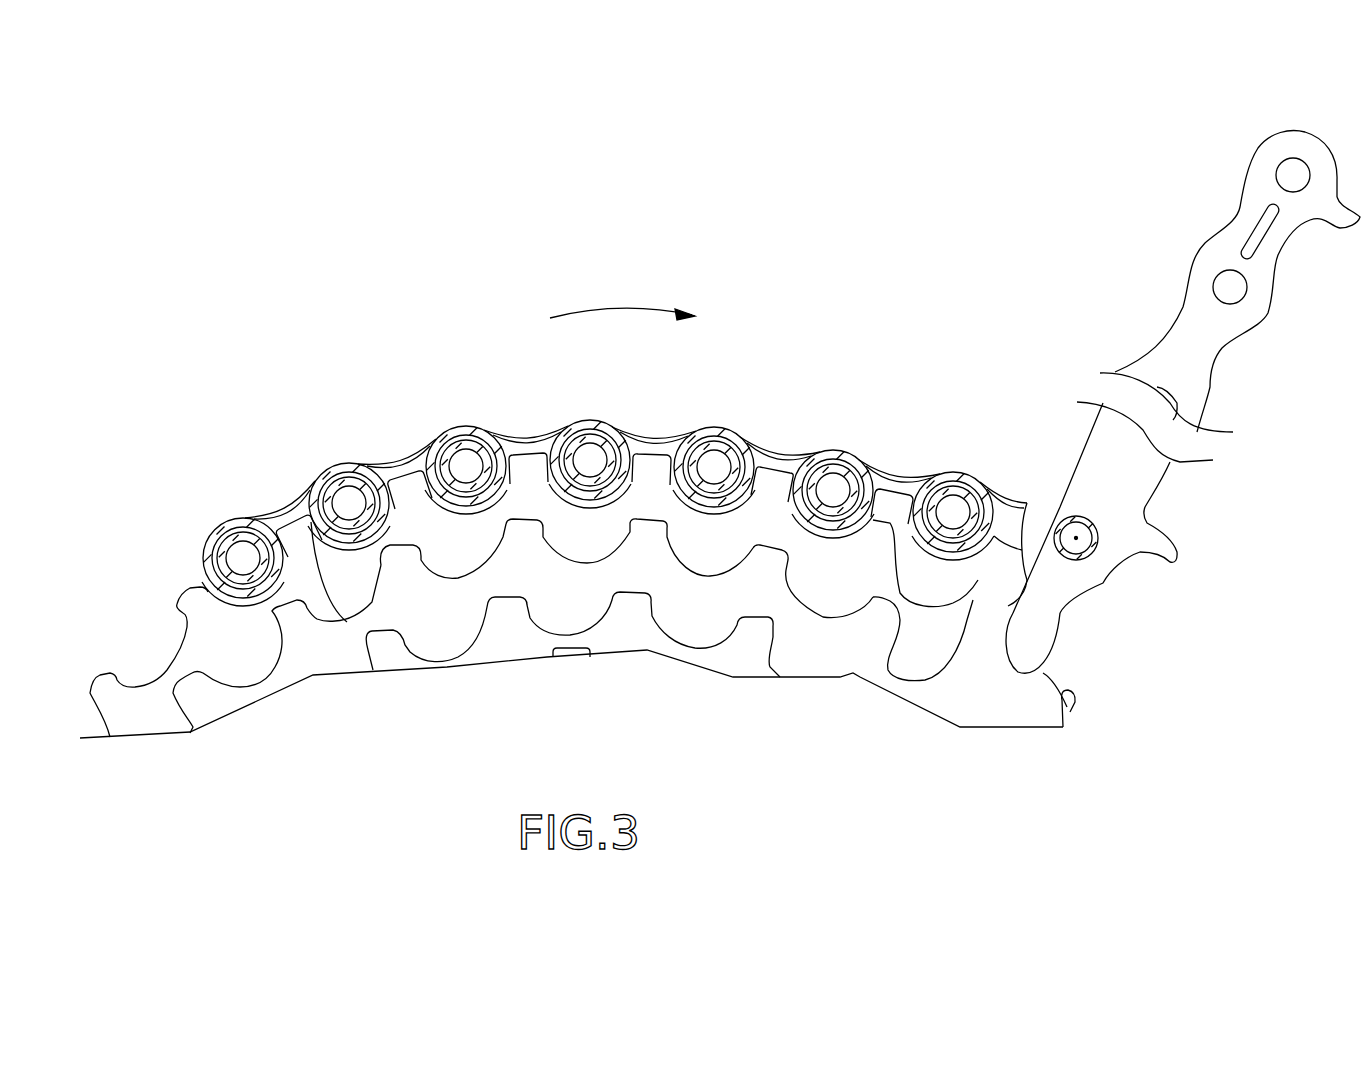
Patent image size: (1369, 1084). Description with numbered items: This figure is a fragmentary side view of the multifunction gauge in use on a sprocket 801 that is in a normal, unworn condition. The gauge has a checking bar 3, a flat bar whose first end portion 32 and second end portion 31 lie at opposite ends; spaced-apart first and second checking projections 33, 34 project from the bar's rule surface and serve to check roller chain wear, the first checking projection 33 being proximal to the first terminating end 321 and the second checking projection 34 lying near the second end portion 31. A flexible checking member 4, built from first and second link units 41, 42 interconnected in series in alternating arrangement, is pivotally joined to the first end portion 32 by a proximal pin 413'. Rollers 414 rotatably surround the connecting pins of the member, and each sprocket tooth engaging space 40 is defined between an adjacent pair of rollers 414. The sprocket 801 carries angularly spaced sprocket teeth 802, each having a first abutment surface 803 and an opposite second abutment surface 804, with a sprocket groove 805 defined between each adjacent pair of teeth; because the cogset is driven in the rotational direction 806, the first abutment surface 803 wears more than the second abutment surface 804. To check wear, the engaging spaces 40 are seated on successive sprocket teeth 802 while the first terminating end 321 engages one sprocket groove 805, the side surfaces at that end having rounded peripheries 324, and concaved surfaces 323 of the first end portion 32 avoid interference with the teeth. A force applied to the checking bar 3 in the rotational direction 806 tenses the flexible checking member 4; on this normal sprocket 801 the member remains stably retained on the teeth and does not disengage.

The checking bar 3 is at (1193, 262).
The second end portion 31 is at (1262, 302).
The second checking projection 34 is at (1337, 218).
The flexible checking member 4 is at (186, 550).
The sprocket tooth engaging space 40 is at (528, 452).
The first link unit 41 is at (490, 428).
The second link unit 42 is at (390, 460).
The roller 414 is at (338, 464).
The rotational direction 806 is at (622, 294).
The sprocket 801 is at (210, 715).
The sprocket tooth 802 is at (300, 560).
The first abutment surface 803 is at (410, 560).
The second abutment surface 804 is at (958, 598).
The sprocket groove 805 is at (920, 573).
The first end portion 32 is at (1037, 643).
The first terminating end 321 is at (1008, 653).
The concaved surface 323 is at (1013, 521).
The rounded periphery 324 is at (1060, 696).
The first checking projection 33 is at (1180, 558).
The proximal pin 413' is at (1156, 524).